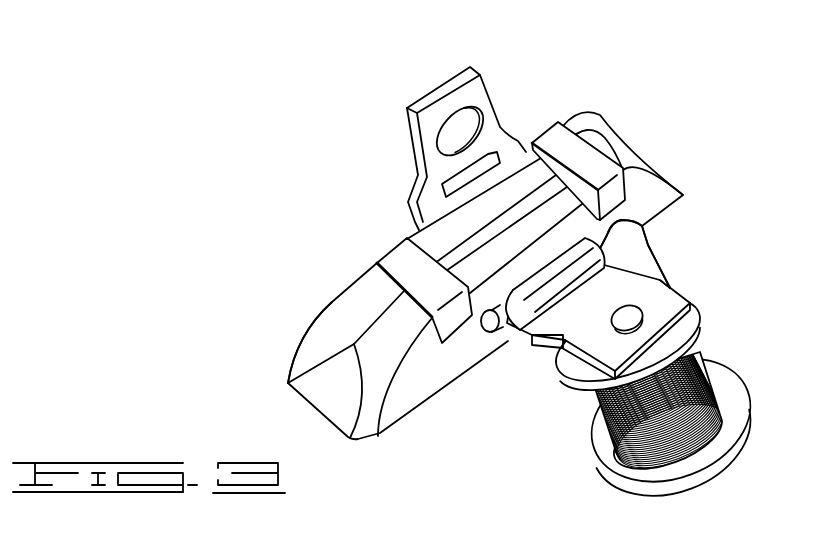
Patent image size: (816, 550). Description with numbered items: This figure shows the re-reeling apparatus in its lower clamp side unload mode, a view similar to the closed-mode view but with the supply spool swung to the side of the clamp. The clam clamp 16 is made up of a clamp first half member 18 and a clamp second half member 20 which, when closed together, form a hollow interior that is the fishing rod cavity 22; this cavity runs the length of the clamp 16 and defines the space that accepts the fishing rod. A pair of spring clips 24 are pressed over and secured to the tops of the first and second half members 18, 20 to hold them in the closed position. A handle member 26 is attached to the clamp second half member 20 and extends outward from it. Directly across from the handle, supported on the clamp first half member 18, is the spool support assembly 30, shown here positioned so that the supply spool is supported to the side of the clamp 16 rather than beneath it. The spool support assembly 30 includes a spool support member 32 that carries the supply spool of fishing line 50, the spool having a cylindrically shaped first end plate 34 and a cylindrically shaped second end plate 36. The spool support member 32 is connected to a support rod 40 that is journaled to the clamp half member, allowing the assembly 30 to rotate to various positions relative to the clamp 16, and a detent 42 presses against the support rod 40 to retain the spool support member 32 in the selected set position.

The clam clamp 16 is at (308, 333).
The clamp first half member 18 is at (402, 398).
The clamp second half member 20 is at (356, 296).
The fishing rod cavity 22 is at (318, 389).
The spring clips 24 is at (395, 246).
The handle member 26 is at (437, 84).
The spool support assembly 30 is at (665, 400).
The spool support member 32 is at (632, 254).
The first end plate 34 is at (697, 328).
The second end plate 36 is at (738, 406).
The support rod 40 is at (644, 224).
The detent 42 is at (540, 268).
The fishing line 50 is at (703, 383).